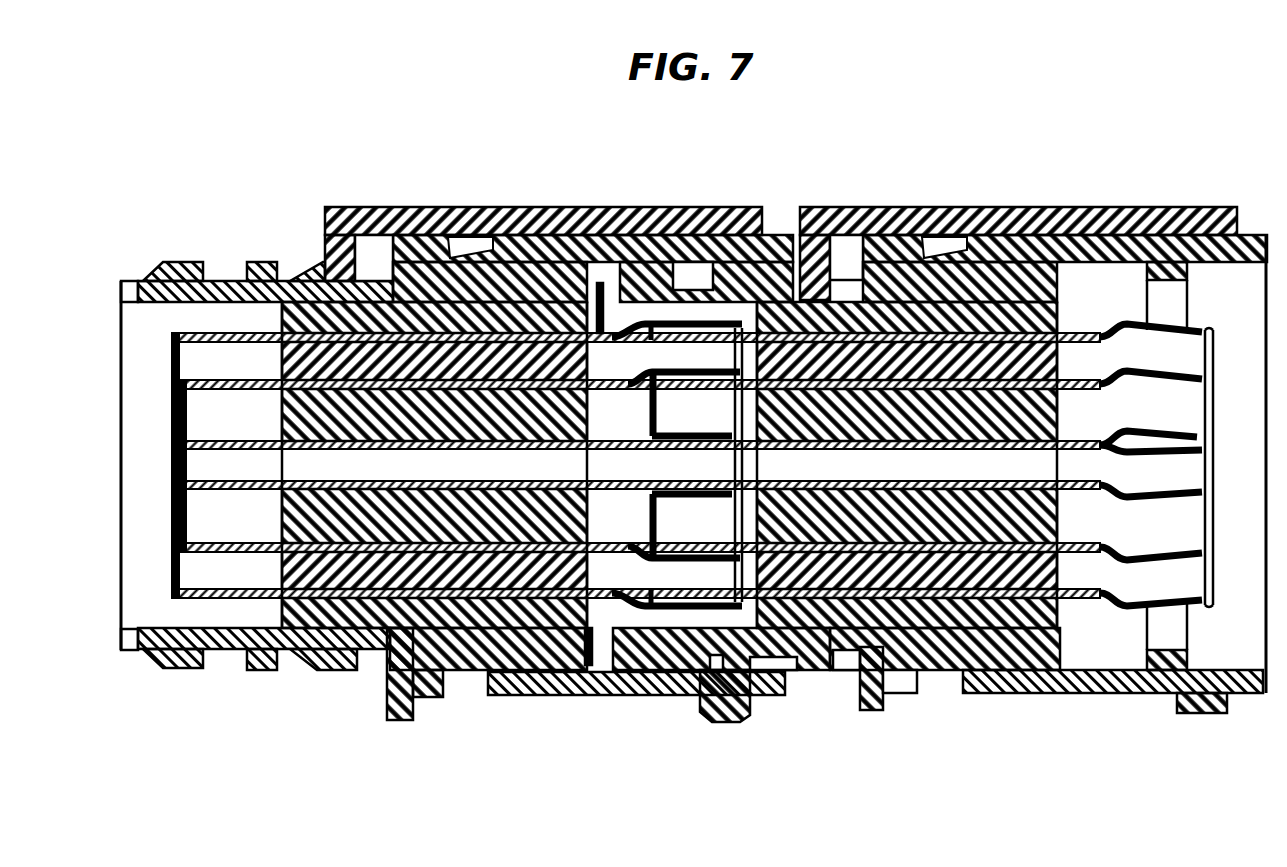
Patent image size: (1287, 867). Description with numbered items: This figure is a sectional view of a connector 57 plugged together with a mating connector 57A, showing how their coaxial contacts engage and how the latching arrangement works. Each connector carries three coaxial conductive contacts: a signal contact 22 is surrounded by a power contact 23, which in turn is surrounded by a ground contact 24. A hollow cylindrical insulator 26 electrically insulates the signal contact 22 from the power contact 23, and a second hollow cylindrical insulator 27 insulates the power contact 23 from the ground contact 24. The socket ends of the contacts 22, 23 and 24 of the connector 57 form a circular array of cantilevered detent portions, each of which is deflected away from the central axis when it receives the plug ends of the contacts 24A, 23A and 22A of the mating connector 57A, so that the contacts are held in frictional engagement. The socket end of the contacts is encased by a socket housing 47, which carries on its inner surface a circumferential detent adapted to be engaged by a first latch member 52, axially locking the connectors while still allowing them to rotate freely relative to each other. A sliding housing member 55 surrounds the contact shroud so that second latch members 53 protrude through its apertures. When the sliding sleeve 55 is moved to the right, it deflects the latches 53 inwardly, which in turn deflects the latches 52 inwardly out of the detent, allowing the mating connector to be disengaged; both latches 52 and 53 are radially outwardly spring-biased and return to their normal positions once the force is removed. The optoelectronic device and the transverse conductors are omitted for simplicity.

The signal contact 22 is at (580, 420).
The plug end of signal contact 22A is at (1058, 498).
The power contact 23 is at (580, 366).
The plug end of power contact 23A is at (1062, 392).
The ground contact 24 is at (197, 340).
The plug end of ground contact 24A is at (1060, 318).
The hollow cylindrical insulator 26 is at (275, 497).
The hollow cylindrical insulator 27 is at (285, 368).
The socket housing 47 is at (617, 697).
The first latch member 52 is at (183, 262).
The second latch member 53 is at (310, 262).
The sliding housing member 55 is at (257, 262).
The connector 57 is at (372, 198).
The connector 57A is at (1017, 198).